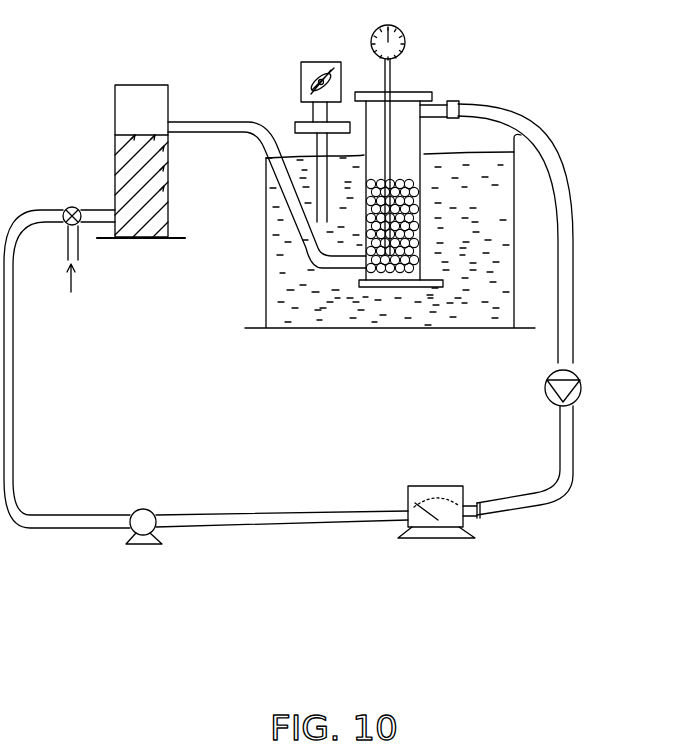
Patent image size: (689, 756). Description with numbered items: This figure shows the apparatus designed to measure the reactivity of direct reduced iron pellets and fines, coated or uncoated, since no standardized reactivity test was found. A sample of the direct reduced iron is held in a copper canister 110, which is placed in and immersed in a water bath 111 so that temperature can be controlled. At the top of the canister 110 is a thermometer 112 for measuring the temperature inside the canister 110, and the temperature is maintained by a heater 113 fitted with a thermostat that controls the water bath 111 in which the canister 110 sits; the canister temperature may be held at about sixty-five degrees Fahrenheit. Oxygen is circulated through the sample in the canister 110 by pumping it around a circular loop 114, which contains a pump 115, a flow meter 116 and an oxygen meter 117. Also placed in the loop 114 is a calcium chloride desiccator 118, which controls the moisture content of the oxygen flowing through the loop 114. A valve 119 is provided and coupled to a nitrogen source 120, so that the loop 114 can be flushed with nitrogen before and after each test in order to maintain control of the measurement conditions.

The copper canister 110 is at (420, 197).
The water bath 111 is at (514, 245).
The thermometer 112 is at (406, 37).
The heater 113 is at (300, 80).
The circular loop 114 is at (549, 508).
The pump 115 is at (140, 509).
The flow meter 116 is at (582, 385).
The oxygen meter 117 is at (437, 485).
The desiccator 118 is at (170, 190).
The valve 119 is at (71, 206).
The nitrogen source 120 is at (80, 247).